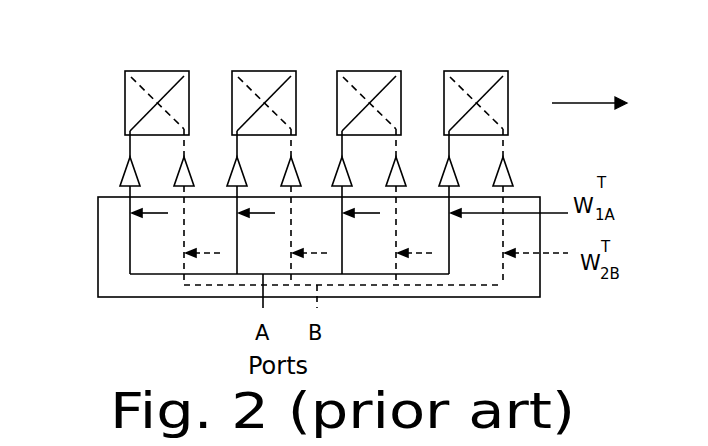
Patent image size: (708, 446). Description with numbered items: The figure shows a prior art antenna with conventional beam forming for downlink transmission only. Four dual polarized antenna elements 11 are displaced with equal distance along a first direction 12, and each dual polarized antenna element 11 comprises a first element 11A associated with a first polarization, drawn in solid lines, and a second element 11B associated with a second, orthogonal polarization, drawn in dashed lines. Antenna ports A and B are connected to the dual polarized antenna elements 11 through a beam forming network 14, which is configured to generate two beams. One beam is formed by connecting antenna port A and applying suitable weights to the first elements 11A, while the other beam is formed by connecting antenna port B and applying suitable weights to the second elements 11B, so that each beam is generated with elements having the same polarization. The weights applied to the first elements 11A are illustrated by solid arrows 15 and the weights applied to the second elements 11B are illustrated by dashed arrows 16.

The dual polarized antenna element 11 is at (146, 71).
The first element 11A is at (125, 128).
The second element 11B is at (125, 88).
The first direction 12 is at (589, 92).
The beam forming network 14 is at (102, 249).
The solid arrows 15 is at (155, 213).
The dashed arrows 16 is at (218, 255).